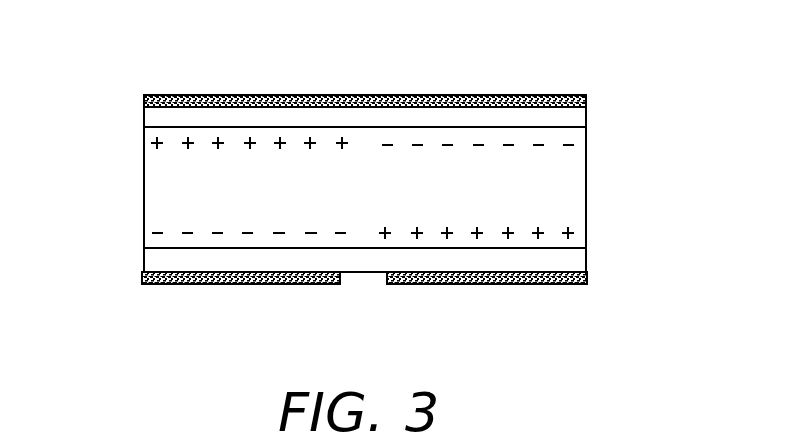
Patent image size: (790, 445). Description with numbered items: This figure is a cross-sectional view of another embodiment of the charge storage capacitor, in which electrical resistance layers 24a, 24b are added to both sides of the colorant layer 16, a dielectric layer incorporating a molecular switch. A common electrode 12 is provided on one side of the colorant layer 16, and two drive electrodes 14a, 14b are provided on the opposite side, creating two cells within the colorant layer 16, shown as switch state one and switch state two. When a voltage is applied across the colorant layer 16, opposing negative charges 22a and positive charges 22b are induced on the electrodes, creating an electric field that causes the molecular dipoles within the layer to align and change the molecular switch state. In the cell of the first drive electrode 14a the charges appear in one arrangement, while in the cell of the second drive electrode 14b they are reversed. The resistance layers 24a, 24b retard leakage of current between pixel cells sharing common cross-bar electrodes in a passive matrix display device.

The common electrode 12 is at (202, 95).
The drive electrode 14a is at (185, 284).
The drive electrode 14b is at (528, 284).
The colorant layer 16 is at (143, 207).
The negative charges 22a is at (447, 145).
The positive charges 22b is at (280, 143).
The electrical resistance layer 24a is at (143, 120).
The electrical resistance layer 24b is at (577, 262).